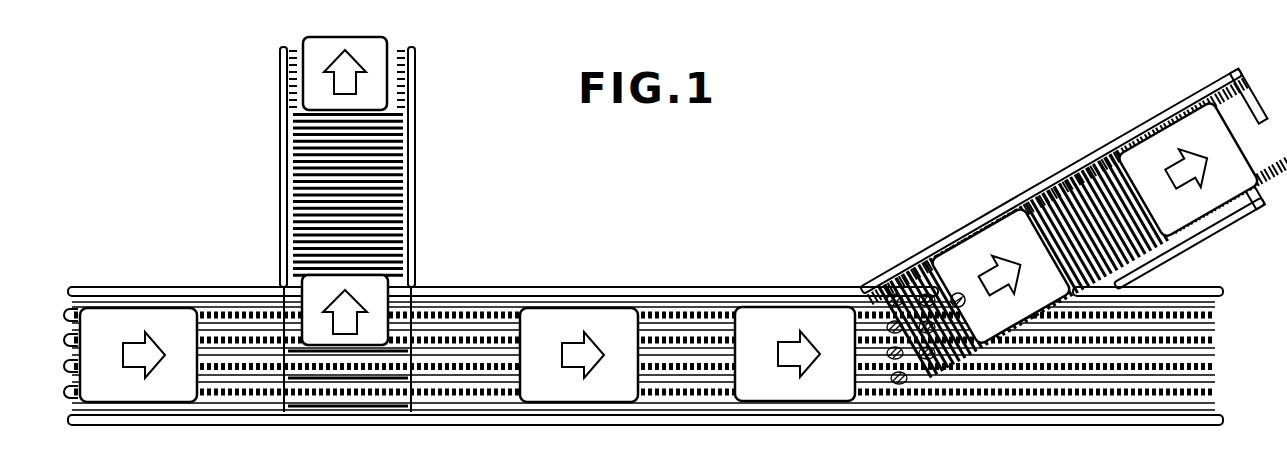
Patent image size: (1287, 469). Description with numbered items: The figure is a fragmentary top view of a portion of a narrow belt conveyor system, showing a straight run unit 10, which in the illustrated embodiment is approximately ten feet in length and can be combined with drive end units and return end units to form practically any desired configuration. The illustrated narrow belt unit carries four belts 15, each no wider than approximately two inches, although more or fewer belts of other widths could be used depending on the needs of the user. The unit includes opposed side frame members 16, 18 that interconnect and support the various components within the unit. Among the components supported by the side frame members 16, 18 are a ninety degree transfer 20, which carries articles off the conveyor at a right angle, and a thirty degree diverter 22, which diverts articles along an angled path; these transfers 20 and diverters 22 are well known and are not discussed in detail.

The straight run unit 10 is at (574, 432).
The belts 15 is at (1252, 312).
The side frame member 16 is at (768, 426).
The side frame member 18 is at (729, 288).
The 90° transfer 20 is at (347, 410).
The 30° diverter 22 is at (893, 362).